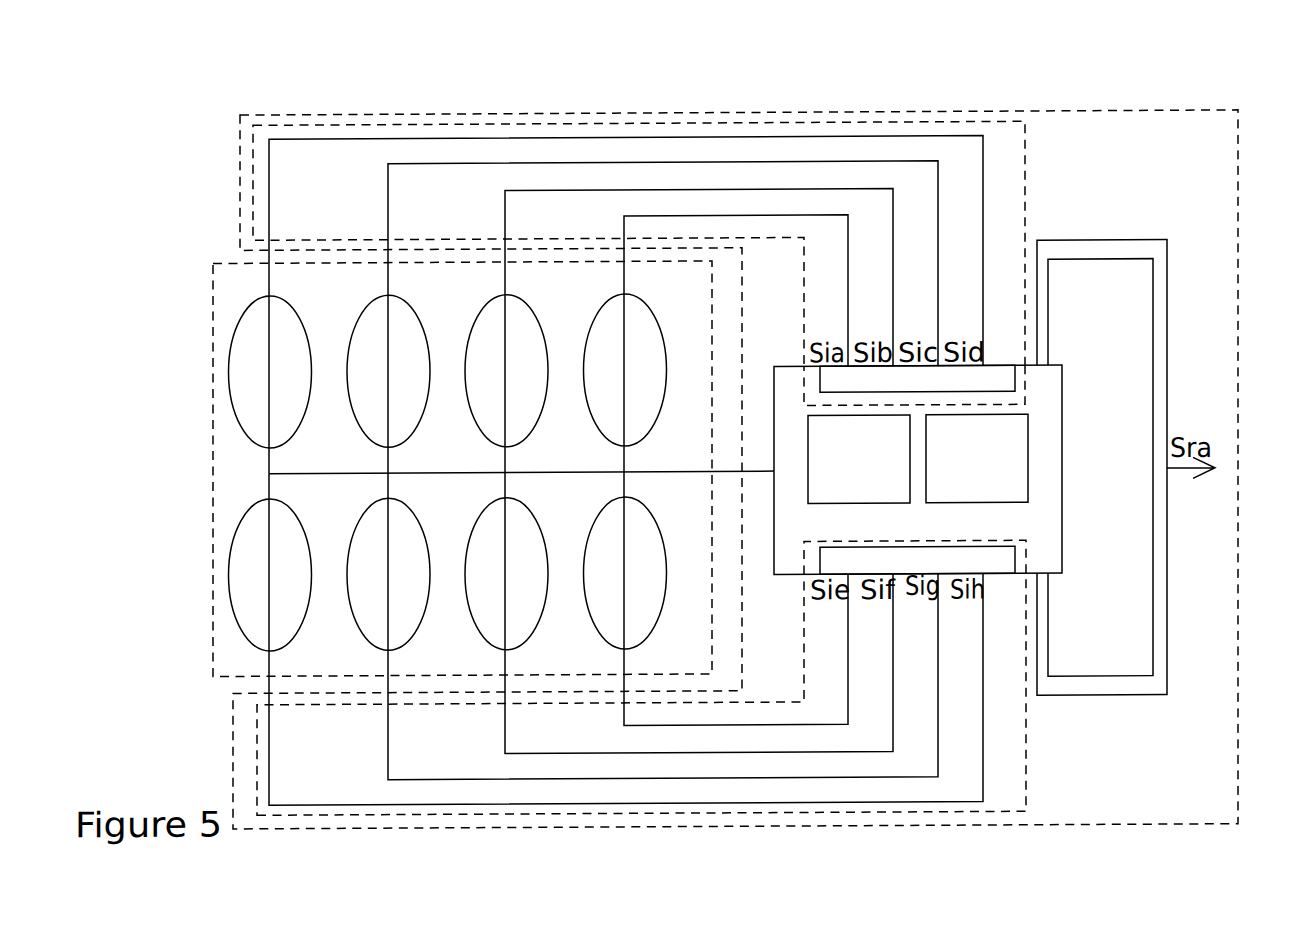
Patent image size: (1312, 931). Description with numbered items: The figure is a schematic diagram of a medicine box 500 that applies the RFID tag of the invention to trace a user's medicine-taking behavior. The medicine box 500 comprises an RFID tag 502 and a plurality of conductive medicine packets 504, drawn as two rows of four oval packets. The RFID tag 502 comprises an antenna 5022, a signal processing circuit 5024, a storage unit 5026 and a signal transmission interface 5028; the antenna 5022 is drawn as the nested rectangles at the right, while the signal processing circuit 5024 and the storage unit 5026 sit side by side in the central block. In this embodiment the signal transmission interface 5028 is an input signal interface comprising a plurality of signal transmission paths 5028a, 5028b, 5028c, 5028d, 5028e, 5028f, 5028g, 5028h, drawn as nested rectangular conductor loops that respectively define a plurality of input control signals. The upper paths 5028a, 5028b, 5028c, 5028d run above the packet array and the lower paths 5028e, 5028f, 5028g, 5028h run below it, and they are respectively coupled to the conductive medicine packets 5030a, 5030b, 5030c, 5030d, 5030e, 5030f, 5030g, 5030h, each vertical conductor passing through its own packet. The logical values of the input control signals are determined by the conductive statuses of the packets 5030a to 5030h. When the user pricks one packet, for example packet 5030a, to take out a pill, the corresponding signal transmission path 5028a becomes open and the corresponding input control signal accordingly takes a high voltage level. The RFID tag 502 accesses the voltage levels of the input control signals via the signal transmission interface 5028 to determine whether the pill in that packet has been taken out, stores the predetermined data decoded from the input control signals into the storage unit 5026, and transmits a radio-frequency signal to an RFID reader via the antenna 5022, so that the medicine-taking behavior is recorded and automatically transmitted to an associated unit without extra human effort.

The medicine box 500 is at (1165, 105).
The RFID tag 502 is at (240, 160).
The conductive medicine packets 504 is at (213, 472).
The antenna 5022 is at (1102, 697).
The signal processing circuit 5024 is at (946, 504).
The storage unit 5026 is at (828, 504).
The signal transmission interface 5028 is at (253, 220).
The signal transmission path 5028a is at (270, 210).
The signal transmission path 5028b is at (387, 178).
The signal transmission path 5028c is at (505, 218).
The signal transmission path 5028d is at (624, 220).
The signal transmission path 5028e is at (272, 735).
The signal transmission path 5028f is at (389, 765).
The signal transmission path 5028g is at (505, 725).
The signal transmission path 5028h is at (624, 725).
The conductive medicine packet 5030a is at (310, 296).
The conductive medicine packet 5030b is at (430, 296).
The conductive medicine packet 5030c is at (548, 297).
The conductive medicine packet 5030d is at (666, 298).
The conductive medicine packet 5030e is at (300, 630).
The conductive medicine packet 5030f is at (418, 630).
The conductive medicine packet 5030g is at (536, 631).
The conductive medicine packet 5030h is at (655, 632).